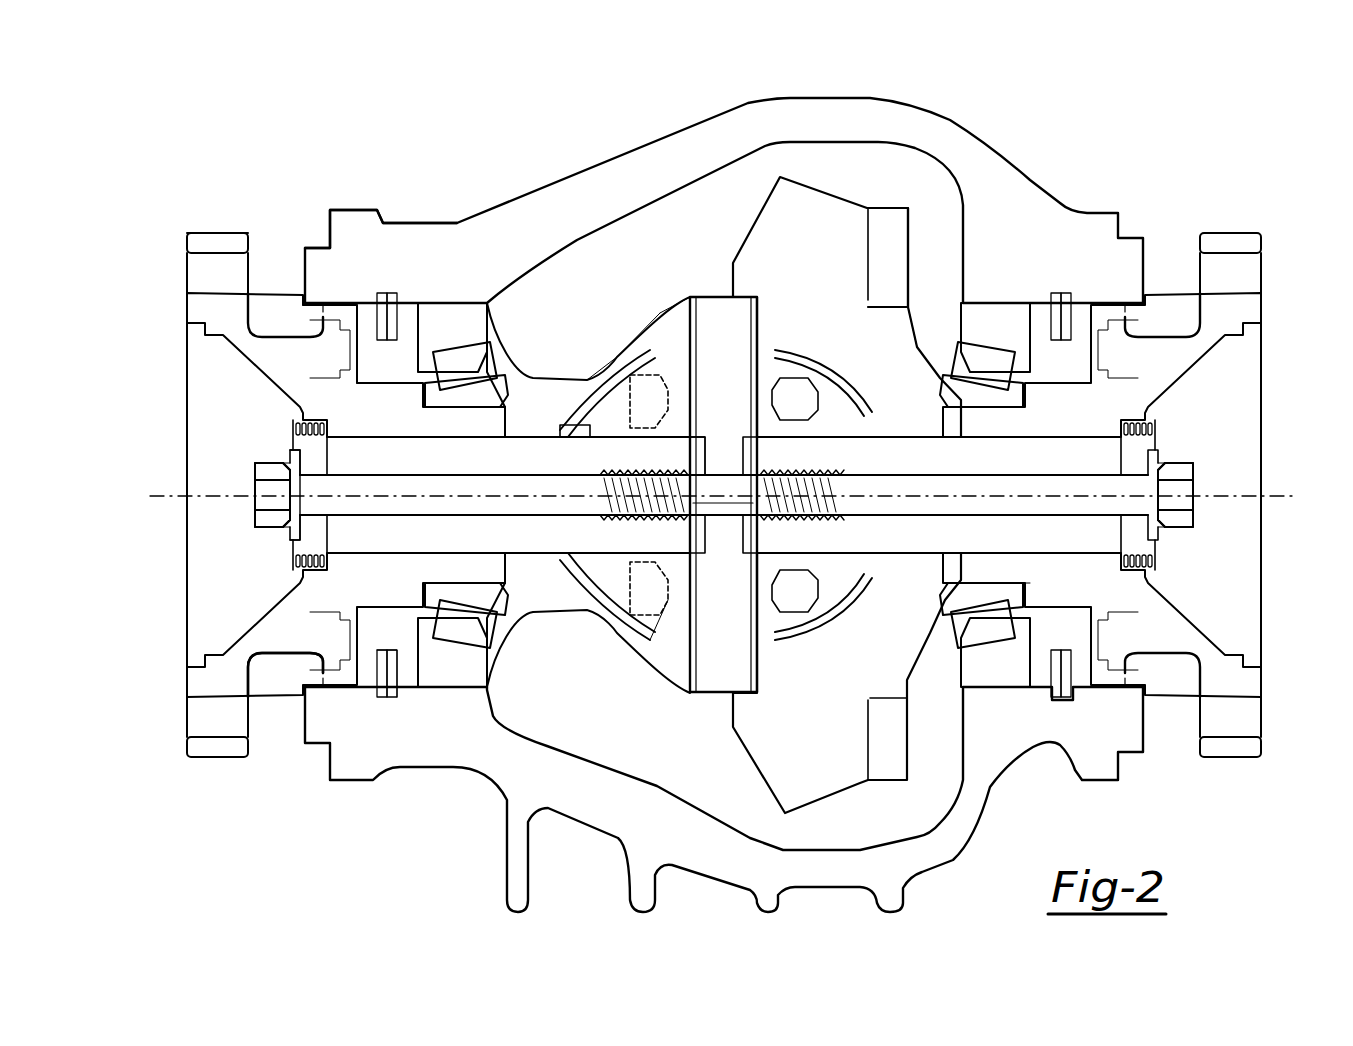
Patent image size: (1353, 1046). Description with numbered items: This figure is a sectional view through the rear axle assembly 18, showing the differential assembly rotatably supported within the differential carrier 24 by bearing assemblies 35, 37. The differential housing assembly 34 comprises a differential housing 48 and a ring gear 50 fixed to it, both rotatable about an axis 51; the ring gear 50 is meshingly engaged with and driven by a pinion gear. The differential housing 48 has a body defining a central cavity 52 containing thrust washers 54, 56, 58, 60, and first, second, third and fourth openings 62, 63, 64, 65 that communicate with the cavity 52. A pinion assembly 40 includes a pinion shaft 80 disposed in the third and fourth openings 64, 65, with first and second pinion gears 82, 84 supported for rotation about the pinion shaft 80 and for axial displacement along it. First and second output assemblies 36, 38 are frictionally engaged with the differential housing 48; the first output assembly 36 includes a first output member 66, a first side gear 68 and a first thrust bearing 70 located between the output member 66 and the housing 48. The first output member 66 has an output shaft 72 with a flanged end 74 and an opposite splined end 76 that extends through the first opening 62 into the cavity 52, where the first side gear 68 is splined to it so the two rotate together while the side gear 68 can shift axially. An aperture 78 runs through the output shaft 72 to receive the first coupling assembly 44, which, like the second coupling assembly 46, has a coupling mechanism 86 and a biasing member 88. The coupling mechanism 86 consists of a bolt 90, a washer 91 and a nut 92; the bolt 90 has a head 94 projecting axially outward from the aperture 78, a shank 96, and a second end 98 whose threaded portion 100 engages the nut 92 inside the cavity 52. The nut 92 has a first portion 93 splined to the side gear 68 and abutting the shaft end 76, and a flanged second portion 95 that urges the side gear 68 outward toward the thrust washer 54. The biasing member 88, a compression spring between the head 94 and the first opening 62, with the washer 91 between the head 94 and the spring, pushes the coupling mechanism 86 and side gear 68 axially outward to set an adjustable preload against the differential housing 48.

The axle assembly 18 is at (190, 190).
The differential carrier 24 is at (998, 150).
The differential housing assembly 34 is at (578, 292).
The bearing assembly 35 is at (455, 300).
The first output assembly 36 is at (182, 775).
The bearing assembly 37 is at (1000, 300).
The second output assembly 38 is at (1260, 225).
The pinion assembly 40 is at (697, 272).
The first coupling assembly 44 is at (258, 545).
The second coupling assembly 46 is at (1173, 465).
The differential housing 48 is at (645, 655).
The ring gear 50 is at (823, 195).
The axis 51 is at (1283, 496).
The central cavity 52 is at (625, 445).
The thrust washer 54 is at (585, 560).
The thrust washer 56 is at (860, 420).
The thrust washer 58 is at (788, 360).
The thrust washer 60 is at (660, 645).
The first opening 62 is at (724, 494).
The second opening 63 is at (990, 545).
The third opening 64 is at (757, 312).
The fourth opening 65 is at (757, 668).
The first output member 66 is at (210, 240).
The first side gear 68 is at (620, 600).
The first thrust bearing 70 is at (392, 580).
The output shaft 72 is at (513, 540).
The flanged end 74 is at (268, 640).
The end 76 is at (605, 460).
The aperture 78 is at (516, 456).
The pinion shaft 80 is at (736, 498).
The first pinion gear 82 is at (785, 375).
The second pinion gear 84 is at (785, 625).
The coupling mechanism 86 is at (245, 460).
The biasing member 88 is at (300, 420).
The bolt 90 is at (455, 500).
The washer 91 is at (292, 560).
The nut 92 is at (625, 515).
The first portion 93 is at (645, 445).
The head 94 is at (255, 515).
The second portion 95 is at (686, 445).
The shank 96 is at (525, 490).
The second end 98 is at (690, 492).
The threaded portion 100 is at (630, 520).